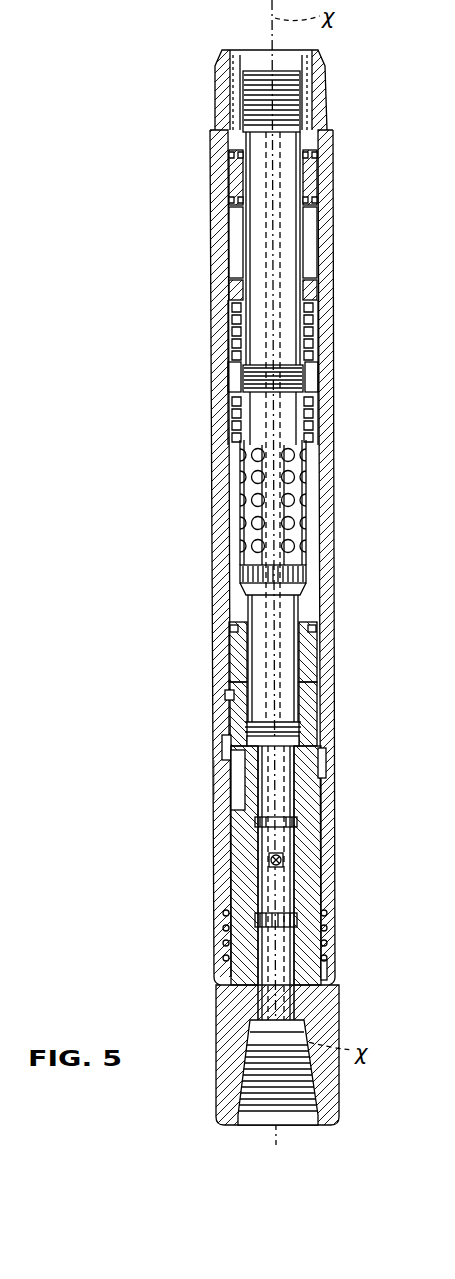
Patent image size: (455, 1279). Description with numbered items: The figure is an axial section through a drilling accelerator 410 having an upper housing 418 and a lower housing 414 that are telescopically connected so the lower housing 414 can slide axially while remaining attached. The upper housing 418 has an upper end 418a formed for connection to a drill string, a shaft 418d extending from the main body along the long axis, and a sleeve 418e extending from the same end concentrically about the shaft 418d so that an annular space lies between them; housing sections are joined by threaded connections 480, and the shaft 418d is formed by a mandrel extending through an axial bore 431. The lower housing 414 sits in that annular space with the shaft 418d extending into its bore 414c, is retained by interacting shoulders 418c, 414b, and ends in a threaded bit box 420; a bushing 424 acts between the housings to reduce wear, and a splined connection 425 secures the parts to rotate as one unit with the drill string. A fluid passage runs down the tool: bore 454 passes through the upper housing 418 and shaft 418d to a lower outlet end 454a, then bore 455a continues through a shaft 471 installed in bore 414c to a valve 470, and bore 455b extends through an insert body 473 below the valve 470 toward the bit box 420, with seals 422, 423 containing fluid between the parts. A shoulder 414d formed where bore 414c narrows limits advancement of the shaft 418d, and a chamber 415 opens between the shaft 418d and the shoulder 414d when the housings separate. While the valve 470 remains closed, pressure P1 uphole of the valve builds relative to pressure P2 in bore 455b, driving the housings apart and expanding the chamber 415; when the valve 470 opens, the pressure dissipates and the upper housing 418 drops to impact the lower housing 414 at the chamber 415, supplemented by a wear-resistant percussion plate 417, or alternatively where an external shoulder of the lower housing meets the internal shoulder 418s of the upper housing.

The drilling accelerator 410 is at (92, 316).
The upper end 418a is at (207, 80).
The upper housing 418 is at (210, 260).
The bore 454 is at (278, 268).
The threaded connections 480 is at (304, 372).
The splined connection 425 is at (322, 472).
The axial bore 431 is at (296, 514).
The internal shoulder 418s is at (336, 637).
The lower outlet end 454a is at (337, 656).
The bore 414c is at (315, 710).
The shoulder 414d is at (300, 735).
The chamber 415 is at (320, 742).
The pressure P1 is at (338, 775).
The seal 423 is at (300, 800).
The insert body 473 is at (296, 825).
The valve 470 is at (282, 860).
The bushing 424 is at (298, 915).
The pressure P2 is at (340, 975).
The bore 455b is at (290, 1003).
The bit box 420 is at (240, 1095).
The lower housing 414 is at (216, 1003).
The sleeve 418e is at (222, 845).
The bore 455a is at (232, 870).
The shaft 471 is at (232, 790).
The shoulder 418c is at (214, 772).
The shoulder 414b is at (218, 748).
The percussion plate 417 is at (216, 722).
The seal 422 is at (215, 698).
The shaft 418d is at (262, 676).